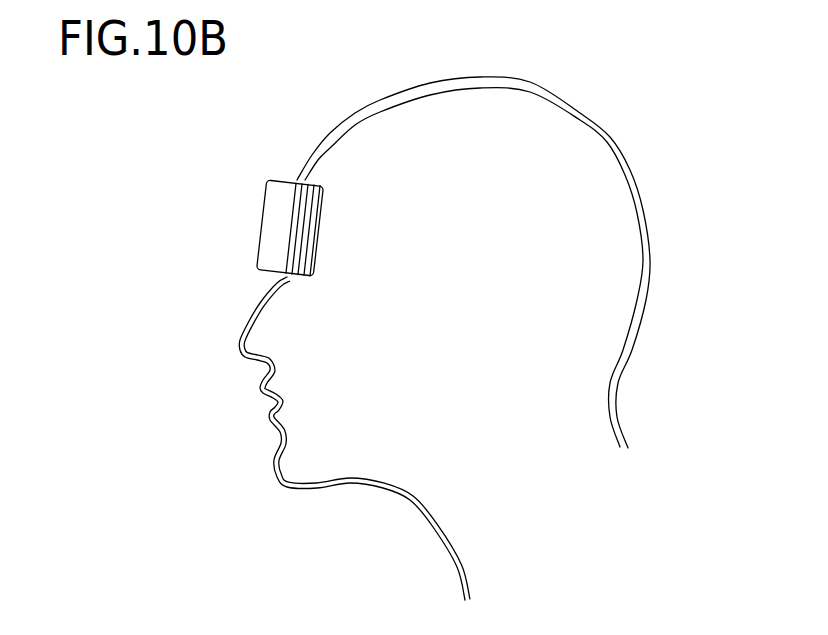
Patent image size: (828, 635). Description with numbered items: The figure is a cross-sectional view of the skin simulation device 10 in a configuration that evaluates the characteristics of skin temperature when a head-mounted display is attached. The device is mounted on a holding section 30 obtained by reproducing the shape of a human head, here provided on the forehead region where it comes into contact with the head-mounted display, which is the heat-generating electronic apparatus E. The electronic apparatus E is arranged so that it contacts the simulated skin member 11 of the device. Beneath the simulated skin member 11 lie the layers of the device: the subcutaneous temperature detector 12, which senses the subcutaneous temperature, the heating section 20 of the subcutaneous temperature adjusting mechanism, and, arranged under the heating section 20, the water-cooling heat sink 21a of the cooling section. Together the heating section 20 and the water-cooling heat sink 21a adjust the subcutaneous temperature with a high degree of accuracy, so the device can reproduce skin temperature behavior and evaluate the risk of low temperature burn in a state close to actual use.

The holding section 30 is at (623, 148).
The skin simulation device 10 is at (335, 220).
The electronic apparatus E is at (263, 213).
The simulated skin member 11 is at (290, 278).
The subcutaneous temperature detector 12 is at (298, 278).
The heating section 20 is at (307, 278).
The water-cooling heat sink 21a is at (313, 280).